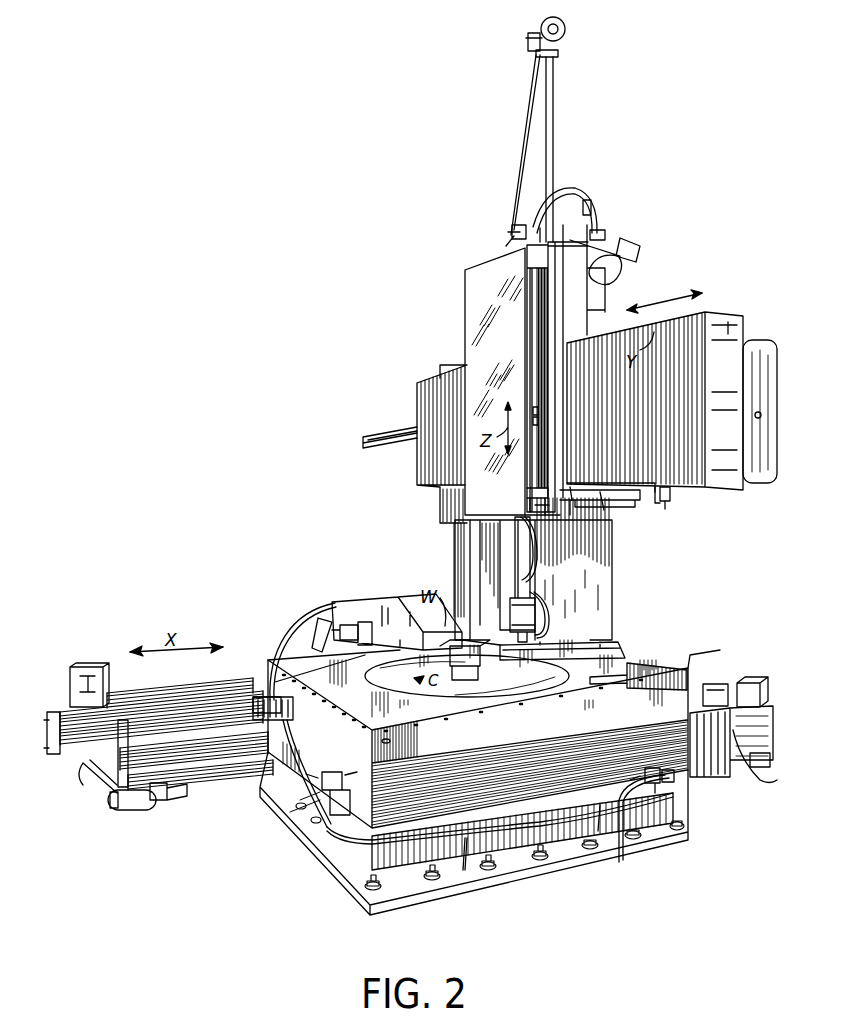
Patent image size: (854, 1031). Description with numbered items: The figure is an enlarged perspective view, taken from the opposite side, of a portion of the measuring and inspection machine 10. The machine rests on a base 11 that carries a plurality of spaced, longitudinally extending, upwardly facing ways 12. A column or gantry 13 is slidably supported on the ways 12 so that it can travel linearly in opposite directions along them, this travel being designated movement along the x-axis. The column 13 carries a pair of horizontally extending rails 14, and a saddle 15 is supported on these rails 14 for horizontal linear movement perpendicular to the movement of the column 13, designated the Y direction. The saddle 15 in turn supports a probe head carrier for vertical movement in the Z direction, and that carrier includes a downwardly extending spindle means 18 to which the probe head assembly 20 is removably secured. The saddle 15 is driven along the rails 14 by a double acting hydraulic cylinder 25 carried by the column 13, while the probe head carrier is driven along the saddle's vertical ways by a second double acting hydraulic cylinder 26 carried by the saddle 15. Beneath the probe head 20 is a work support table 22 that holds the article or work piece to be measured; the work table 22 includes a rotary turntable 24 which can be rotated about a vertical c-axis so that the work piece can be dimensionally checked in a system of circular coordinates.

The measuring and inspection machine 10 is at (360, 240).
The base 11 is at (187, 778).
The ways 12 is at (192, 730).
The column 13 is at (605, 576).
The rails 14 is at (666, 507).
The saddle 15 is at (597, 232).
The spindle means 18 is at (513, 575).
The probe head assembly 20 is at (538, 613).
The work support table 22 is at (688, 674).
The rotary turntable 24 is at (612, 640).
The hydraulic cylinder 25 is at (370, 437).
The hydraulic cylinder 26 is at (550, 174).